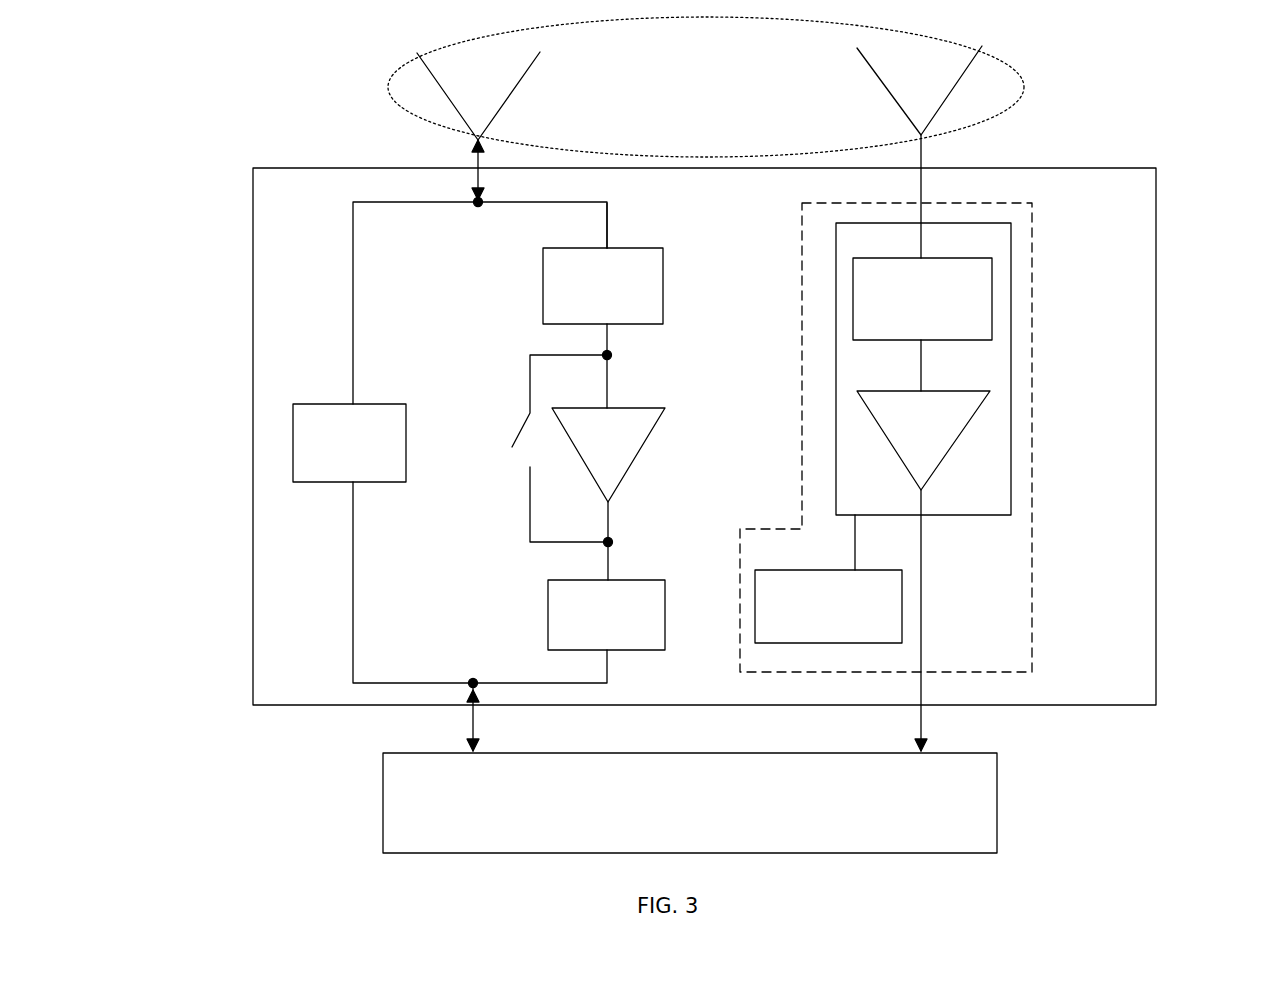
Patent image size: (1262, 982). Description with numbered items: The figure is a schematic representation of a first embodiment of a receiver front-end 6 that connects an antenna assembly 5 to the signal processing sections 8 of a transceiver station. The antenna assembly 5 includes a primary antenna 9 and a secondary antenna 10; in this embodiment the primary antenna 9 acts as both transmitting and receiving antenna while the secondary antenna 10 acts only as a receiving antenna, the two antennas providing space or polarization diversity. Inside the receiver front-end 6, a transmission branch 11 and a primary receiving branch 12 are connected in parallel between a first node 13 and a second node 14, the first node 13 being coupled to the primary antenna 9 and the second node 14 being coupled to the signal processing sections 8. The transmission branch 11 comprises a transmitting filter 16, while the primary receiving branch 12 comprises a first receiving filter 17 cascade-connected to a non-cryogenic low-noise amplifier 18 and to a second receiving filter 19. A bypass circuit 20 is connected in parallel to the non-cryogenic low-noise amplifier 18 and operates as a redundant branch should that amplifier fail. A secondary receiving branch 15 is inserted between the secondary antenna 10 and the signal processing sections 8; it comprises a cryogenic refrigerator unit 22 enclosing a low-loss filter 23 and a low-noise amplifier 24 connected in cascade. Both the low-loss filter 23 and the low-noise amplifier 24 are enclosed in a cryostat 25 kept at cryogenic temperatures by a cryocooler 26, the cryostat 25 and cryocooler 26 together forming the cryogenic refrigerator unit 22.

The antenna assembly 5 is at (990, 75).
The receiver front-end 6 is at (1115, 340).
The signal processing sections 8 is at (513, 809).
The primary antenna 9 is at (470, 78).
The secondary antenna 10 is at (917, 57).
The transmission branch 11 is at (352, 632).
The primary receiving branch 12 is at (607, 231).
The first node 13 is at (480, 202).
The second node 14 is at (467, 685).
The secondary receiving branch 15 is at (928, 600).
The transmitting filter 16 is at (307, 437).
The first receiving filter 17 is at (657, 300).
The non-cryogenic low-noise amplifier 18 is at (612, 470).
The second receiving filter 19 is at (570, 619).
The bypass circuit 20 is at (528, 501).
The cryogenic refrigerator unit 22 is at (823, 338).
The low-loss filter 23 is at (973, 298).
The low-noise amplifier 24 is at (938, 442).
The cryostat 25 is at (960, 238).
The cryocooler 26 is at (780, 624).